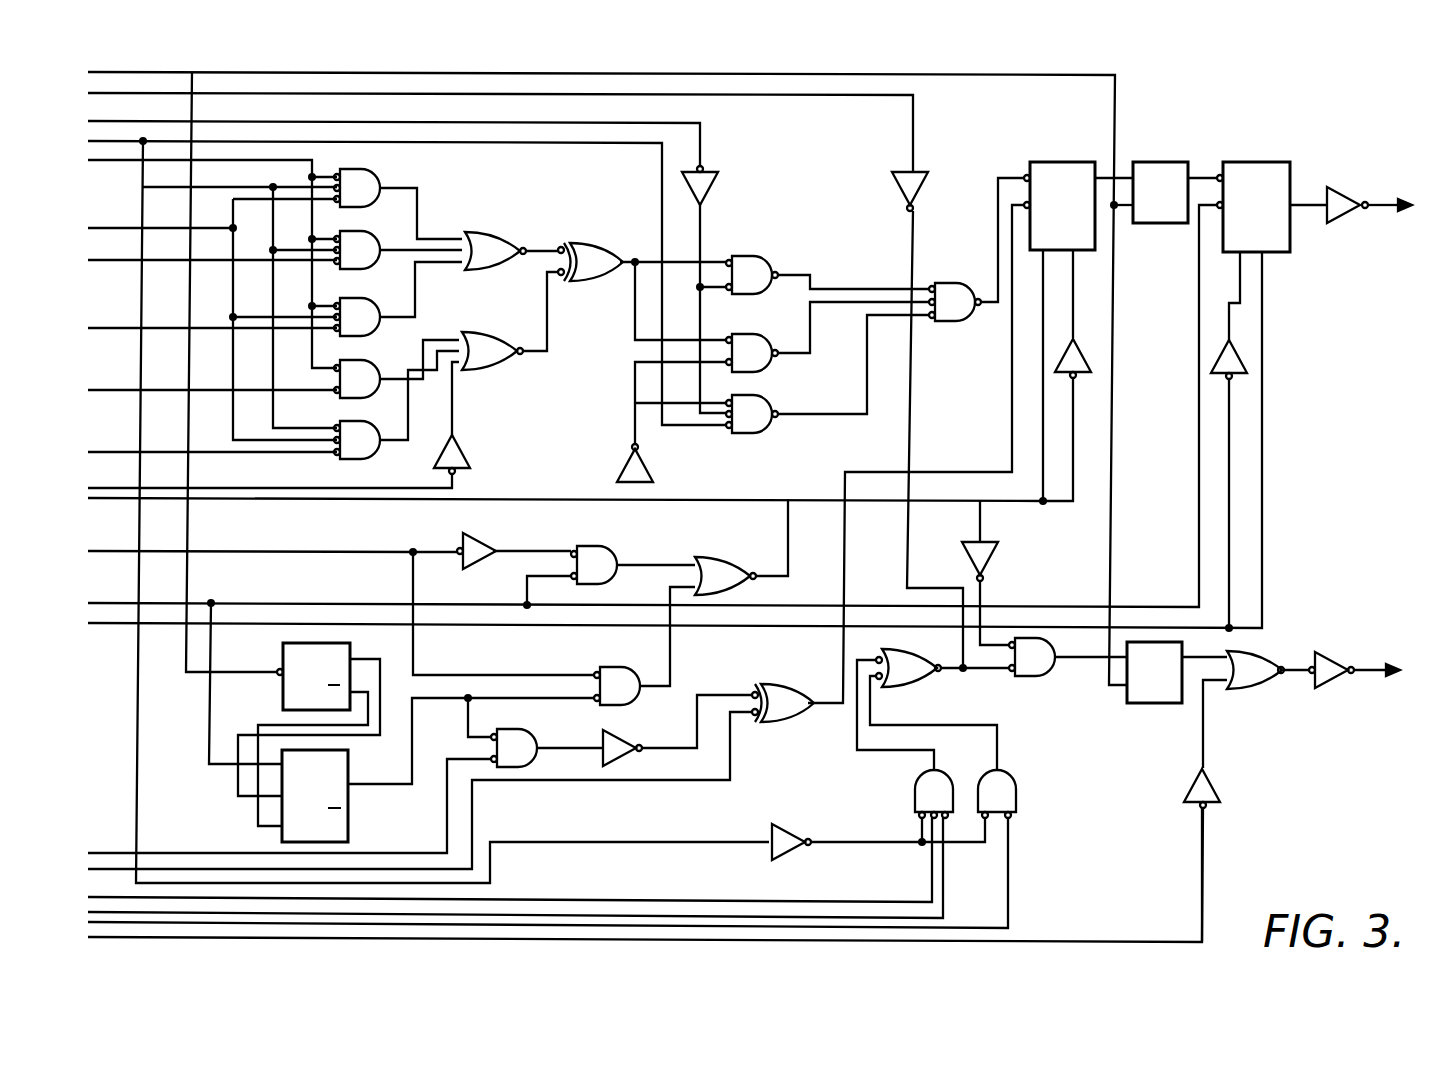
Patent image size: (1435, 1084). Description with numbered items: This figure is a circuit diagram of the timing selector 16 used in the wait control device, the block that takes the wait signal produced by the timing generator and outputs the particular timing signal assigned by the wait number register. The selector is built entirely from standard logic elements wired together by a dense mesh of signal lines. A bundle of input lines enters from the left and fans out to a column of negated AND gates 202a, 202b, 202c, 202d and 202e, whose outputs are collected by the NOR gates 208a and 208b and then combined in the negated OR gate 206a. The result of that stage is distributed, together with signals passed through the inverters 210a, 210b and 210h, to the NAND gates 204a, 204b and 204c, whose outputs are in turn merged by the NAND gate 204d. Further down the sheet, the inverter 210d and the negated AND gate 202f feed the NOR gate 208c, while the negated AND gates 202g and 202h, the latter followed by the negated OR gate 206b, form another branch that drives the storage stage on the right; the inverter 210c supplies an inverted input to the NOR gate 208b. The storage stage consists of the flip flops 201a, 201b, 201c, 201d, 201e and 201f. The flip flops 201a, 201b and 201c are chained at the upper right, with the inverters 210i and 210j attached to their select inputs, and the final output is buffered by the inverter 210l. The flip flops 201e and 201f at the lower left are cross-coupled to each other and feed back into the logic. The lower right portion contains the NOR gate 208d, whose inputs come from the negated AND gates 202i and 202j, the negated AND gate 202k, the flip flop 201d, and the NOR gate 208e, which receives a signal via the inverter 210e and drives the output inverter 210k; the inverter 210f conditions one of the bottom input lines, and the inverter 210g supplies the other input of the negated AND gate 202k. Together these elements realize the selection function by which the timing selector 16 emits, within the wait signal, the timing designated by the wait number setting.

The timing selector 16 is at (1372, 786).
The flip flop 201a is at (1038, 165).
The flip flop 201b is at (1142, 165).
The flip flop 201c is at (1234, 165).
The flip flop 201d is at (1160, 703).
The flip flop 201e is at (290, 665).
The flip flop 201f is at (346, 812).
The negated AND gate 202a is at (370, 198).
The negated AND gate 202b is at (374, 258).
The negated AND gate 202c is at (368, 310).
The negated AND gate 202d is at (368, 378).
The negated AND gate 202e is at (355, 455).
The negated AND gate 202f is at (600, 548).
The negated AND gate 202g is at (615, 678).
The negated AND gate 202h is at (515, 742).
The negated AND gate 202i is at (922, 796).
The negated AND gate 202j is at (1005, 802).
The negated AND gate 202k is at (1032, 668).
The NAND gate 204a is at (748, 270).
The NAND gate 204b is at (760, 365).
The NAND gate 204c is at (760, 425).
The NAND gate 204d is at (955, 318).
The negated OR gate 206a is at (575, 250).
The negated OR gate 206b is at (775, 695).
The NOR gate 208a is at (500, 235).
The NOR gate 208b is at (496, 360).
The NOR gate 208c is at (716, 565).
The NOR gate 208d is at (905, 682).
The NOR gate 208e is at (1240, 688).
The inverter 210a is at (915, 190).
The inverter 210b is at (708, 180).
The inverter 210c is at (468, 460).
The inverter 210d is at (475, 545).
The inverter 210e is at (1215, 782).
The inverter 210f is at (786, 850).
The inverter 210g is at (990, 560).
The inverter 210h is at (640, 460).
The inverter 210i is at (1082, 354).
The inverter 210j is at (1240, 356).
The inverter 210k is at (1330, 662).
The inverter 210l is at (1345, 200).